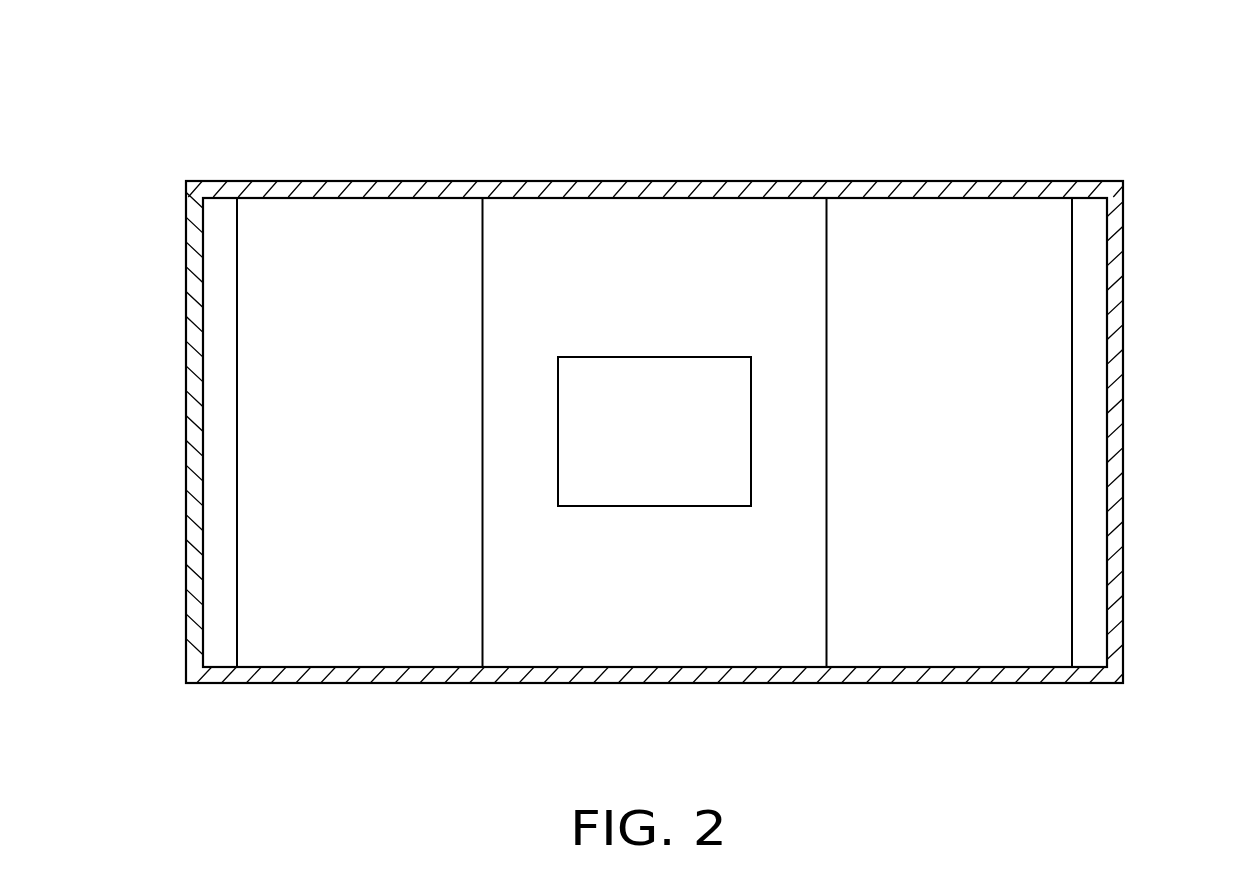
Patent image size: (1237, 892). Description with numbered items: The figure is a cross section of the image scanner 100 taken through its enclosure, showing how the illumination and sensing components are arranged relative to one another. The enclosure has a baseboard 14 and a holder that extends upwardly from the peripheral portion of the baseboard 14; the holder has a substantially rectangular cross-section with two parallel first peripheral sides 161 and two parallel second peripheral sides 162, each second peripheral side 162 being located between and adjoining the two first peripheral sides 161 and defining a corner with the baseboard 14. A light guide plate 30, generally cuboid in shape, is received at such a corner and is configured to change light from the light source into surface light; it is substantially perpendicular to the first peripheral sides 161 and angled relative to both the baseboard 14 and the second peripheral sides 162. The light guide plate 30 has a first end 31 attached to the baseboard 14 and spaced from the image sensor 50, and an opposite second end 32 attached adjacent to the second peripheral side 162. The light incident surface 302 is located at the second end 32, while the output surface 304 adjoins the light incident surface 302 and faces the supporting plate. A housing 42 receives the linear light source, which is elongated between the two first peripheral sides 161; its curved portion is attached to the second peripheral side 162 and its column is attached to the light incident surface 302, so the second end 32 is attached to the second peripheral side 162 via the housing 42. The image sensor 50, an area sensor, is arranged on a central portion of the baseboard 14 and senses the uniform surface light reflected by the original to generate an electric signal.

The image scanner 100 is at (182, 98).
The baseboard 14 is at (766, 625).
The first peripheral side 161 is at (1082, 675).
The second peripheral side 162 is at (1112, 611).
The light guide plate 30 is at (480, 112).
The first end 31 is at (448, 222).
The second end 32 is at (243, 213).
The housing 42 is at (226, 417).
The light incident surface 302 is at (237, 438).
The output surface 304 is at (357, 618).
The image sensor 50 is at (653, 467).